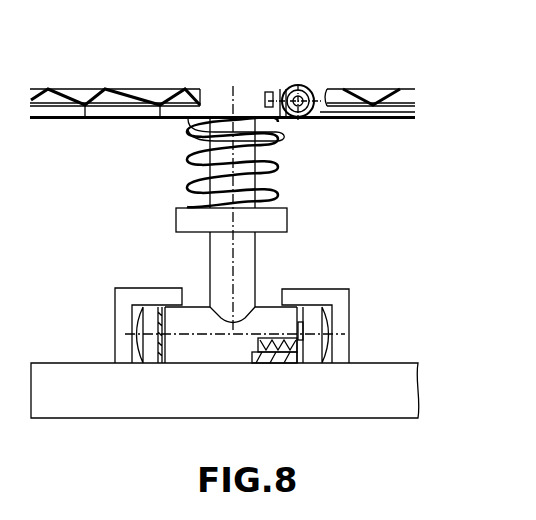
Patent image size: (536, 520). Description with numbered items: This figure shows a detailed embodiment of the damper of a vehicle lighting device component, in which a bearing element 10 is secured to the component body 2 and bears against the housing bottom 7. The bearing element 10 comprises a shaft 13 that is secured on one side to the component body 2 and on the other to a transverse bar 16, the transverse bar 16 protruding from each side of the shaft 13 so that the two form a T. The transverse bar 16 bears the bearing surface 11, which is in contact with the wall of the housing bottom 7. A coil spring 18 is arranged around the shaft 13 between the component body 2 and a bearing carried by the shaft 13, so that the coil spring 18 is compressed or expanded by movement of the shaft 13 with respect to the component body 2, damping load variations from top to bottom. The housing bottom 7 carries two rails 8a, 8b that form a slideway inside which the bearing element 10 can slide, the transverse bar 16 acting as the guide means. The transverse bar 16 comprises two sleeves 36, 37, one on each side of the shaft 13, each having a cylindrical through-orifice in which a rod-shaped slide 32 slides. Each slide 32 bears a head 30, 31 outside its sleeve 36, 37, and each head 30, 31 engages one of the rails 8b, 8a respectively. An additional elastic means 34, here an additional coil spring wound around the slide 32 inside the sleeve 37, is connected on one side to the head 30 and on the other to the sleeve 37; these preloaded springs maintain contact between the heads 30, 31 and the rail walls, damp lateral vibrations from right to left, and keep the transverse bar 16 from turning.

The component body 2 is at (104, 88).
The housing bottom 7 is at (60, 397).
The rail 8a is at (116, 307).
The rail 8b is at (348, 308).
The bearing element 10 is at (262, 275).
The bearing surface 11 is at (197, 366).
The shaft 13 is at (248, 247).
The transverse bar 16 is at (200, 325).
The coil spring 18 is at (272, 151).
The head 30 is at (333, 336).
The head 31 is at (136, 340).
The slide 32 is at (288, 354).
The additional elastic means 34 is at (272, 358).
The sleeve 36 is at (165, 366).
The sleeve 37 is at (300, 322).